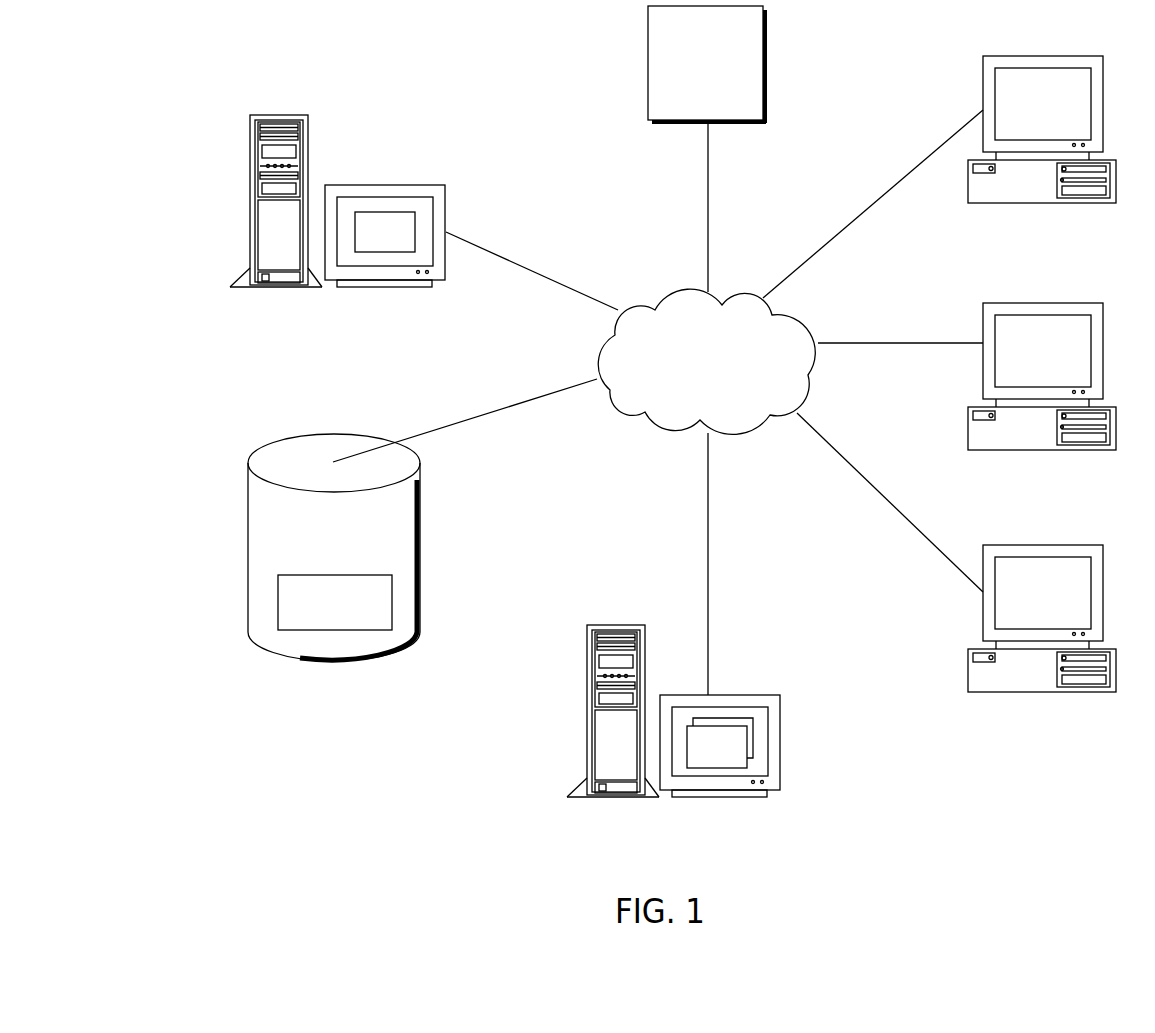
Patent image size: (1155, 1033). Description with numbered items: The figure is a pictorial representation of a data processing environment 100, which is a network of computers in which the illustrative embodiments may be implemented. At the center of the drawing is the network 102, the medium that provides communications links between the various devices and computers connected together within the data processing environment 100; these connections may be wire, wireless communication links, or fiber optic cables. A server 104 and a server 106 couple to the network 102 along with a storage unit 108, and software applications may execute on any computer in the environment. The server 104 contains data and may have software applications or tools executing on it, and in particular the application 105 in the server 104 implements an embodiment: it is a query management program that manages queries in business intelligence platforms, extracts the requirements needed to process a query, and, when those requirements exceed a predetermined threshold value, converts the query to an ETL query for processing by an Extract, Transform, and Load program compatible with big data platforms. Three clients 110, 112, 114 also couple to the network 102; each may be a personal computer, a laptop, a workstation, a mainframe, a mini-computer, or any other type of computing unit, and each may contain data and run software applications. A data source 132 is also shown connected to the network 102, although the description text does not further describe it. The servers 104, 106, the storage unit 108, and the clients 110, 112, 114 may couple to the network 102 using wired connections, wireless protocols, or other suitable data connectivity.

The data processing environment 100 is at (186, 121).
The network 102 is at (728, 393).
The server 104 is at (407, 325).
The application 105 is at (397, 212).
The server 106 is at (742, 835).
The storage unit 108 is at (355, 558).
The client 110 is at (1106, 487).
The client 112 is at (1106, 728).
The client 114 is at (1106, 240).
The data source 132 is at (726, 102).